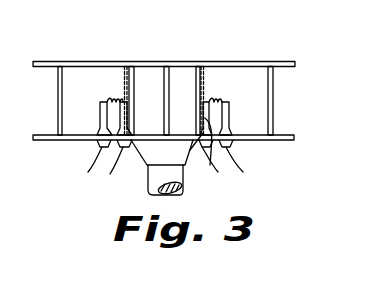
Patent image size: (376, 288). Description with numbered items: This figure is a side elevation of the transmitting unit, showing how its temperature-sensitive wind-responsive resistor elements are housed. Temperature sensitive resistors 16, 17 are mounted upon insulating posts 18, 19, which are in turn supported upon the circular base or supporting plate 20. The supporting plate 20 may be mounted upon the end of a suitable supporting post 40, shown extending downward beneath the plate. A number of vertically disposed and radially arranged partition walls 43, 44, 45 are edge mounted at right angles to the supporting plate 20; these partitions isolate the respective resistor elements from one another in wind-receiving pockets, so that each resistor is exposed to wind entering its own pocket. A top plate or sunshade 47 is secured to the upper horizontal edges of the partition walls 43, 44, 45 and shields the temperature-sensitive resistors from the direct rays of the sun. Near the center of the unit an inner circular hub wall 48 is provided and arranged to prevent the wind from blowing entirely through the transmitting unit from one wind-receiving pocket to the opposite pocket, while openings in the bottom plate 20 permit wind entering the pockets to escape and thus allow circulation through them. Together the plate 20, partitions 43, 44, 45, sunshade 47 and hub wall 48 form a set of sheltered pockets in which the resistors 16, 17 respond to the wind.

The temperature sensitive resistor 16 is at (117, 100).
The temperature sensitive resistor 17 is at (220, 84).
The insulating post 18 is at (208, 147).
The insulating post 19 is at (228, 117).
The supporting plate 20 is at (260, 142).
The supporting post 40 is at (153, 177).
The partition wall 43 is at (62, 107).
The partition wall 44 is at (172, 80).
The partition wall 45 is at (273, 88).
The top plate or sunshade 47 is at (258, 62).
The inner circular hub wall 48 is at (162, 44).